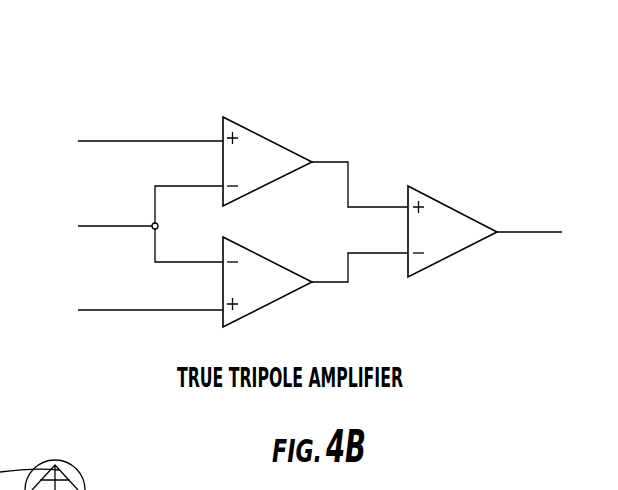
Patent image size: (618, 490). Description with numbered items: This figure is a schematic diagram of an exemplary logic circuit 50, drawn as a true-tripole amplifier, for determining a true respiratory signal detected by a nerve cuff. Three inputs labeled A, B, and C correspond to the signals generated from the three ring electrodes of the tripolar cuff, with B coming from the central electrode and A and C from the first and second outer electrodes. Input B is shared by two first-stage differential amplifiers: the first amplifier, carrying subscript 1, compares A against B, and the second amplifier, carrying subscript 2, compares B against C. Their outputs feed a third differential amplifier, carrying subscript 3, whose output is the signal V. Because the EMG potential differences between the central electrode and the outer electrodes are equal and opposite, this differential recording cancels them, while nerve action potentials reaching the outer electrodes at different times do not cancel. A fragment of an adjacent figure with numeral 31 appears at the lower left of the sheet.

The logic circuit 50 is at (319, 184).
The vehicle wheel (partial, adjacent figure) 31 is at (88, 438).
The first differential amplifier G1 1 is at (267, 161).
The second differential amplifier G2 2 is at (267, 282).
The third differential amplifier G3 3 is at (452, 231).